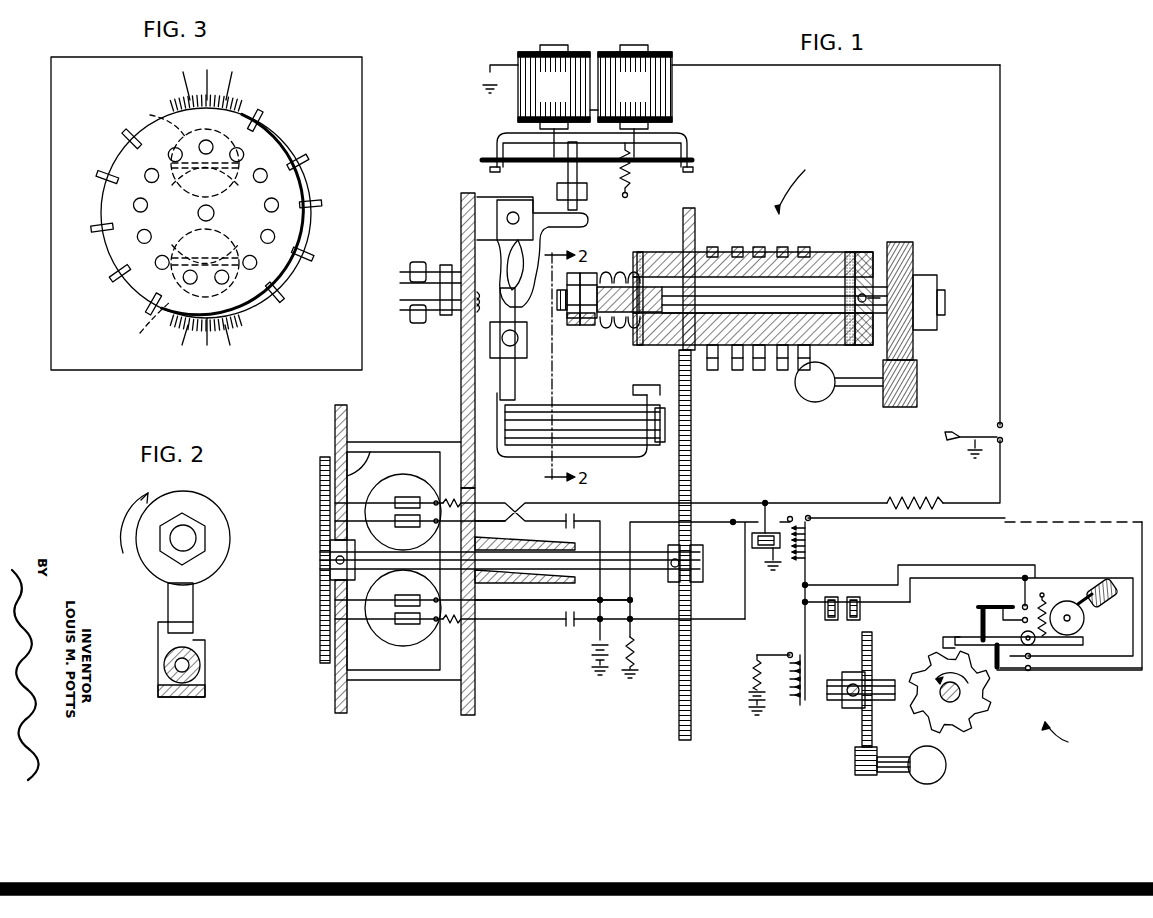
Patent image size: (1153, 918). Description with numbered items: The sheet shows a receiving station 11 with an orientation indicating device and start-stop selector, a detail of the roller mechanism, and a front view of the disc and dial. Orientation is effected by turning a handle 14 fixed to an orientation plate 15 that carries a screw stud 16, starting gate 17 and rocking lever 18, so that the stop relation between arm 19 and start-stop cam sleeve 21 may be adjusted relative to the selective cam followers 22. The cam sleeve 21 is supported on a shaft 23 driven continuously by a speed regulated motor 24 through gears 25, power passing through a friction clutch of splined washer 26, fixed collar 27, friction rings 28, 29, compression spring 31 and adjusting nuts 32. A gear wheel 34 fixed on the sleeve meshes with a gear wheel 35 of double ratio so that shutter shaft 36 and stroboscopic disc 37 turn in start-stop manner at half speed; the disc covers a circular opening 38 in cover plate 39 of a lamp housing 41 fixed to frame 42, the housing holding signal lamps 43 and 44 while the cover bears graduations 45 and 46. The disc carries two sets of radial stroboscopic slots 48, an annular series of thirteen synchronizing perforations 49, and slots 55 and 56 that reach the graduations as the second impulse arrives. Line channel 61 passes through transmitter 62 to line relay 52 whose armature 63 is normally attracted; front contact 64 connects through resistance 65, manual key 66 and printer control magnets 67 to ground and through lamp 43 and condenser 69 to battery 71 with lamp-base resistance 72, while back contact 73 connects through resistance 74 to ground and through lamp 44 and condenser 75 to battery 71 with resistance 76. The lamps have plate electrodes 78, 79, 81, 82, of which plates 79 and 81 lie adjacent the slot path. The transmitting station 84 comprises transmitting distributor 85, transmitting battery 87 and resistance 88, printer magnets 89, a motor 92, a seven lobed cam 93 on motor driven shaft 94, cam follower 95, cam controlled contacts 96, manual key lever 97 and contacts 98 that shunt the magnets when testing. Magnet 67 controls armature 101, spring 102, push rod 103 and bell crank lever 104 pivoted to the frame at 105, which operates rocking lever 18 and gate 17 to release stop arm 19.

In FIG. 1, the receiving station 11 is at (796, 180).
In FIG. 1, the handle 14 is at (430, 262).
In FIG. 1, the orientation plate 15 is at (462, 385).
In FIG. 2, the screw stud 16 is at (200, 664).
In FIG. 1, the screw stud 16 is at (670, 414).
In FIG. 2, the starting gate 17 is at (158, 670).
In FIG. 1, the starting gate 17 is at (638, 450).
In FIG. 1, the rocking lever 18 is at (516, 385).
In FIG. 2, the stop arm 19 is at (195, 606).
In FIG. 1, the stop arm 19 is at (648, 387).
In FIG. 1, the start-stop cam sleeve 21 is at (658, 252).
In FIG. 1, the selective cam followers 22 is at (780, 370).
In FIG. 2, the shaft 23 is at (196, 540).
In FIG. 1, the shaft 23 is at (893, 270).
In FIG. 1, the speed regulated motor 24 is at (812, 402).
In FIG. 1, the gears 25 is at (917, 365).
In FIG. 2, the splined washer 26 is at (232, 552).
In FIG. 1, the splined washer 26 is at (636, 340).
In FIG. 1, the fixed collar 27 is at (866, 252).
In FIG. 1, the friction ring 28 is at (640, 345).
In FIG. 1, the friction ring 29 is at (850, 252).
In FIG. 1, the compression spring 31 is at (610, 327).
In FIG. 2, the adjusting nuts 32 is at (205, 525).
In FIG. 1, the adjusting nuts 32 is at (580, 326).
In FIG. 1, the gear wheel 34 is at (690, 210).
In FIG. 1, the gear wheel of double ratio 35 is at (693, 485).
In FIG. 1, the shutter shaft 36 is at (653, 570).
In FIG. 3, the stroboscopic disc 37 is at (307, 186).
In FIG. 1, the stroboscopic disc 37 is at (320, 470).
In FIG. 1, the circular opening 38 is at (368, 446).
In FIG. 3, the cover plate 39 is at (294, 57).
In FIG. 1, the cover plate 39 is at (347, 410).
In FIG. 1, the lamp housing 41 is at (365, 685).
In FIG. 1, the frame 42 is at (461, 712).
In FIG. 3, the signal lamp 43 is at (237, 137).
In FIG. 1, the signal lamp 43 is at (405, 478).
In FIG. 3, the signal lamp 44 is at (248, 285).
In FIG. 1, the signal lamp 44 is at (405, 648).
In FIG. 3, the graduation 45 is at (207, 74).
In FIG. 3, the graduation 46 is at (207, 332).
In FIG. 3, the radial stroboscopic slots 48 is at (262, 128).
In FIG. 3, the synchronizing perforations 49 is at (278, 205).
In FIG. 1, the line relay 52 is at (758, 550).
In FIG. 3, the slot 55 is at (296, 152).
In FIG. 3, the slot 56 is at (120, 260).
In FIG. 1, the line channel 61 is at (1142, 548).
In FIG. 1, the transmitter 62 is at (800, 560).
In FIG. 1, the armature 63 is at (765, 520).
In FIG. 1, the front contact 64 is at (808, 516).
In FIG. 1, the resistance 65 is at (918, 497).
In FIG. 1, the manual key 66 is at (960, 437).
In FIG. 1, the printer control magnet 67 is at (518, 70).
In FIG. 1, the condenser 69 is at (576, 518).
In FIG. 1, the battery 71 is at (592, 652).
In FIG. 1, the resistance 72 is at (466, 500).
In FIG. 1, the back contact 73 is at (735, 520).
In FIG. 1, the resistance 74 is at (634, 655).
In FIG. 1, the condenser 75 is at (566, 628).
In FIG. 1, the lamp-base resistance 76 is at (466, 628).
In FIG. 3, the plate electrode 78 is at (182, 141).
In FIG. 1, the plate electrode 78 is at (395, 502).
In FIG. 1, the plate electrode 79 is at (395, 522).
In FIG. 3, the plate electrode 81 is at (141, 333).
In FIG. 1, the plate electrode 81 is at (402, 623).
In FIG. 1, the plate electrode 82 is at (395, 600).
In FIG. 1, the transmitting station 84 is at (1066, 740).
In FIG. 1, the transmitting distributor 85 is at (795, 705).
In FIG. 1, the transmitting battery 87 is at (748, 703).
In FIG. 1, the resistance 88 is at (752, 672).
In FIG. 1, the printer magnets 89 is at (853, 598).
In FIG. 1, the motor 92 is at (946, 768).
In FIG. 1, the seven lobed cam 93 is at (980, 705).
In FIG. 1, the motor driven shaft 94 is at (840, 700).
In FIG. 1, the cam follower 95 is at (950, 637).
In FIG. 1, the cam controlled contacts 96 is at (1015, 668).
In FIG. 1, the manual key lever 97 is at (1084, 622).
In FIG. 1, the contacts 98 is at (1008, 605).
In FIG. 1, the armature 101 is at (688, 135).
In FIG. 1, the spring 102 is at (630, 180).
In FIG. 1, the push rod 103 is at (580, 178).
In FIG. 1, the bell crank lever 104 is at (516, 210).
In FIG. 1, the pivot 105 is at (508, 215).